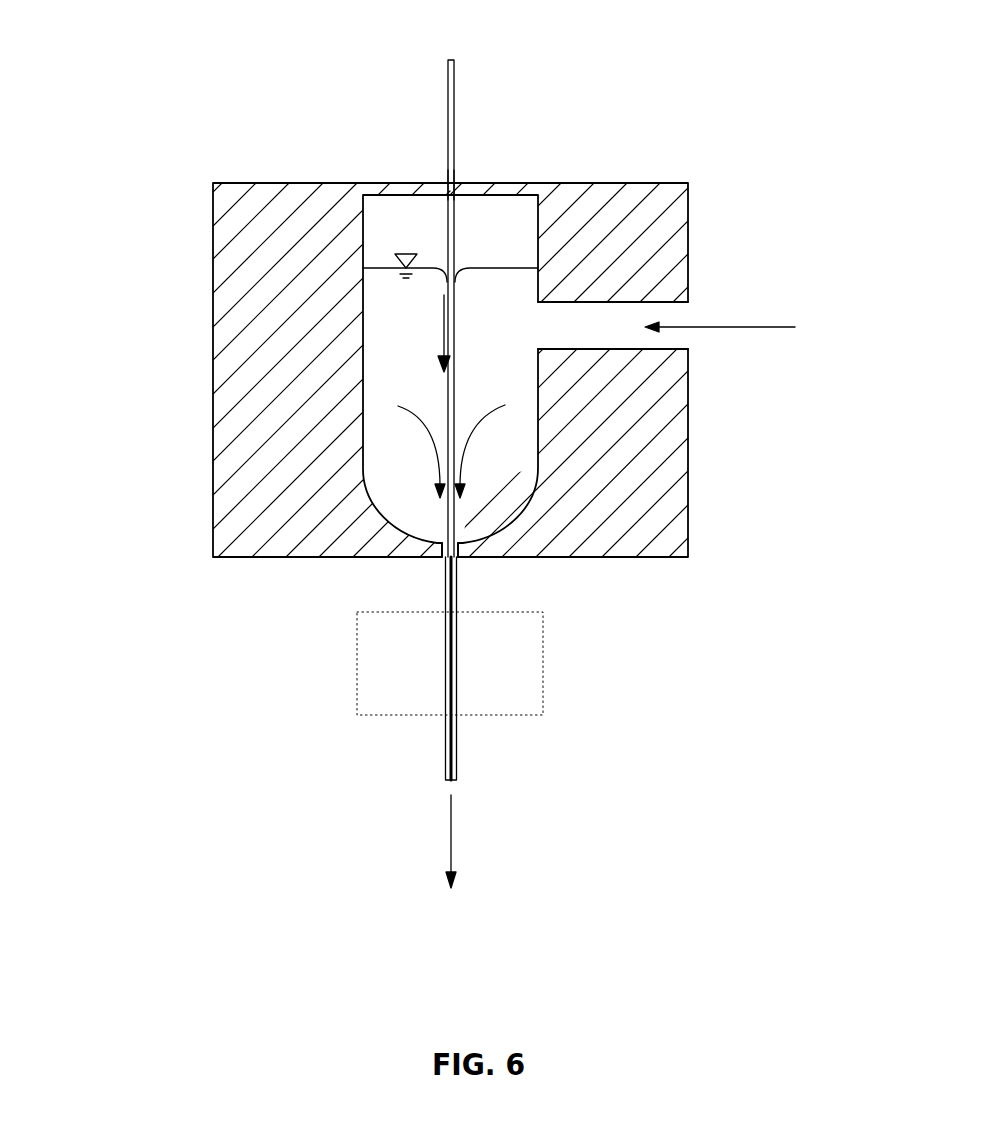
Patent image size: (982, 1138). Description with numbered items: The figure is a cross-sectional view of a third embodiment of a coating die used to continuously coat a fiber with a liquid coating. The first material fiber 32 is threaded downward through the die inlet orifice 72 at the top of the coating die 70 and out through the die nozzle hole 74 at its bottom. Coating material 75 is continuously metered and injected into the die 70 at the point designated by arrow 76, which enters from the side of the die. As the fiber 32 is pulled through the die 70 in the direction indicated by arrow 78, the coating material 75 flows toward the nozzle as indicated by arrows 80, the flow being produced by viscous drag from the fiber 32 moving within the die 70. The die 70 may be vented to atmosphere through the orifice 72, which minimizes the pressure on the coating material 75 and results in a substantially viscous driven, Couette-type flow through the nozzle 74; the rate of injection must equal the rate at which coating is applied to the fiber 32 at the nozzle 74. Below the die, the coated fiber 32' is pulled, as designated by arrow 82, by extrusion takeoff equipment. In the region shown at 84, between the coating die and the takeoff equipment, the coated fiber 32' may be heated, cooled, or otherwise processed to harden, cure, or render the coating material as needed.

The coating die 70 is at (158, 349).
The first material fiber 32 is at (502, 288).
The coated fiber 32' is at (502, 679).
The die inlet orifice 72 is at (455, 177).
The die nozzle hole 74 is at (443, 560).
The coating material 75 is at (505, 329).
The arrow designating injection of coating material 76 is at (742, 327).
The arrow indicating fiber pulling direction 78 is at (443, 333).
The arrows indicating coating material flow 80 is at (430, 443).
The arrow designating pulling of coated fiber 82 is at (450, 855).
The processing location 84 is at (403, 715).